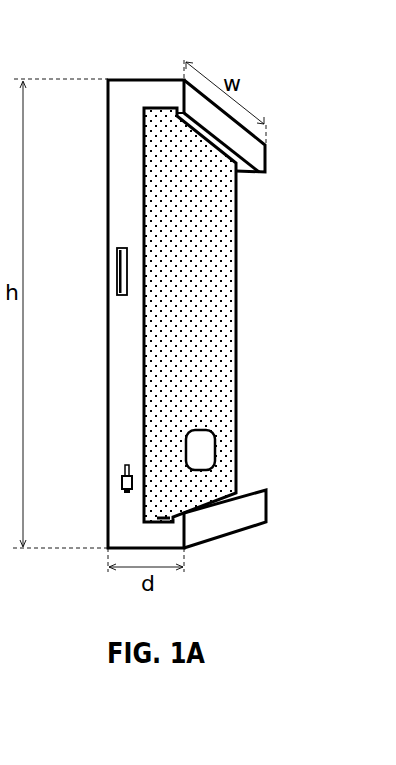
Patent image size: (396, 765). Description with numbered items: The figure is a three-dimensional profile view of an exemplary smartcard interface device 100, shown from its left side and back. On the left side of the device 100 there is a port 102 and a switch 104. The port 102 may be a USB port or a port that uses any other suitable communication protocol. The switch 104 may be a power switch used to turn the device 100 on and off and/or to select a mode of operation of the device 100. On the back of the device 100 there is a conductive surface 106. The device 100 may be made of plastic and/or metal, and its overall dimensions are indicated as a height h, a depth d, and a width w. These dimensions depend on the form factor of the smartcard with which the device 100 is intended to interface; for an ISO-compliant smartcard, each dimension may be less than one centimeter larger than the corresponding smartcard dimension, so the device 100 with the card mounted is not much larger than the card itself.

The smartcard interface device 100 is at (149, 80).
The port 102 is at (117, 277).
The switch 104 is at (122, 483).
The conductive surface 106 is at (202, 443).